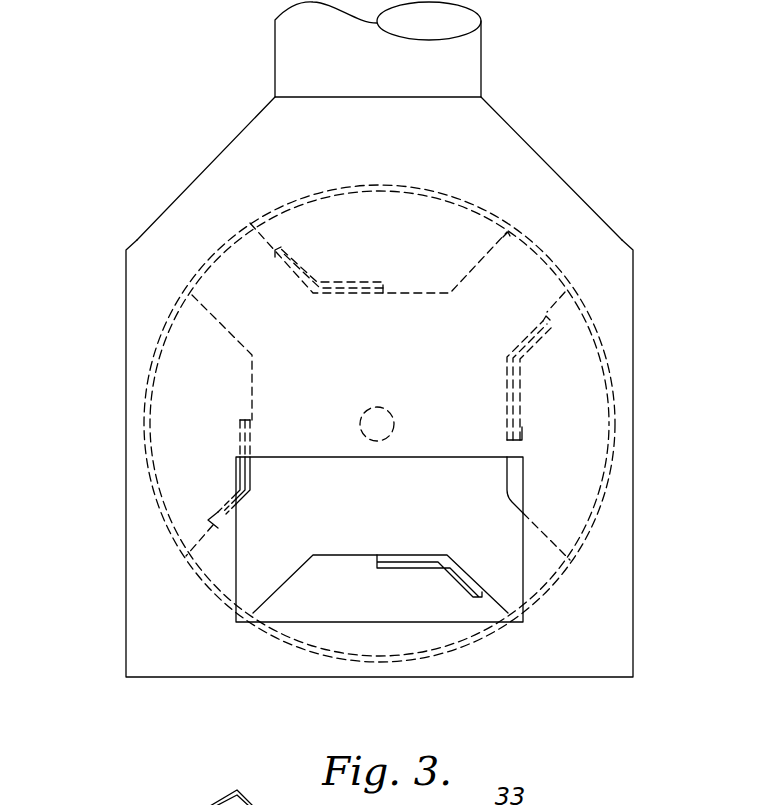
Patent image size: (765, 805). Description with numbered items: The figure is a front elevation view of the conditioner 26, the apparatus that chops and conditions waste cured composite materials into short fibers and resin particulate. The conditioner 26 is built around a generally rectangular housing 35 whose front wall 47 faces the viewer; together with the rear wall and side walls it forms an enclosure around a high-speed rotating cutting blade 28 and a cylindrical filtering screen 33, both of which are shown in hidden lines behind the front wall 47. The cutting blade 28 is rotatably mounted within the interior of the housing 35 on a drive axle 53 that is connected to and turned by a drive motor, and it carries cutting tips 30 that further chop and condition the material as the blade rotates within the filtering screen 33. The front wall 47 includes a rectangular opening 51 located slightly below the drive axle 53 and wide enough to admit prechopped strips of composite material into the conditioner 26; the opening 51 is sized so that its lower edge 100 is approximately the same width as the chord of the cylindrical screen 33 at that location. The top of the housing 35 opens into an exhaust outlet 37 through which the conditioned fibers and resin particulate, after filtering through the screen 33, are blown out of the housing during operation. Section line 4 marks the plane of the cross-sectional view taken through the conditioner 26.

The section line 4- 4 is at (302, 196).
The conditioner 26 is at (590, 130).
The cutting blade 28 is at (250, 402).
The cutting tips 30 is at (208, 513).
The cylindrical filtering screen 33 is at (145, 380).
The housing 35 is at (198, 180).
The outlet 37 is at (484, 47).
The front wall 47 is at (403, 158).
The rectangular opening 51 is at (438, 622).
The drive axle 53 is at (395, 422).
The lower edge 100 is at (287, 623).